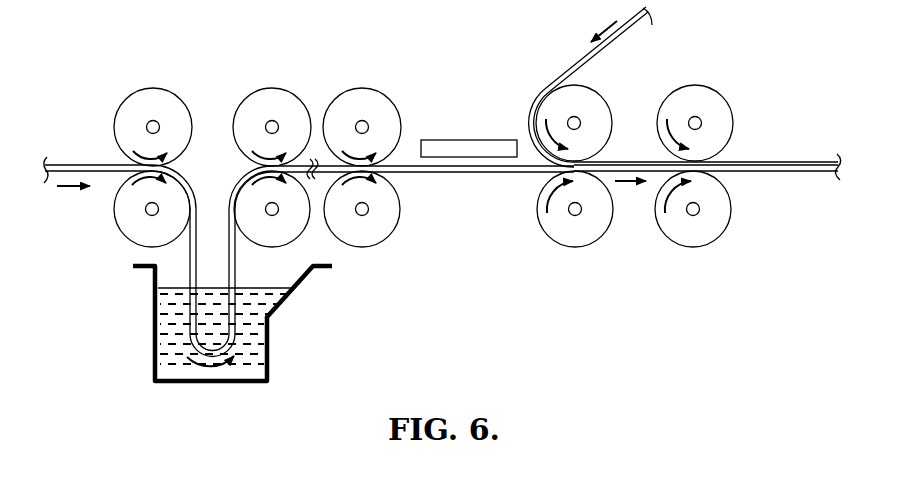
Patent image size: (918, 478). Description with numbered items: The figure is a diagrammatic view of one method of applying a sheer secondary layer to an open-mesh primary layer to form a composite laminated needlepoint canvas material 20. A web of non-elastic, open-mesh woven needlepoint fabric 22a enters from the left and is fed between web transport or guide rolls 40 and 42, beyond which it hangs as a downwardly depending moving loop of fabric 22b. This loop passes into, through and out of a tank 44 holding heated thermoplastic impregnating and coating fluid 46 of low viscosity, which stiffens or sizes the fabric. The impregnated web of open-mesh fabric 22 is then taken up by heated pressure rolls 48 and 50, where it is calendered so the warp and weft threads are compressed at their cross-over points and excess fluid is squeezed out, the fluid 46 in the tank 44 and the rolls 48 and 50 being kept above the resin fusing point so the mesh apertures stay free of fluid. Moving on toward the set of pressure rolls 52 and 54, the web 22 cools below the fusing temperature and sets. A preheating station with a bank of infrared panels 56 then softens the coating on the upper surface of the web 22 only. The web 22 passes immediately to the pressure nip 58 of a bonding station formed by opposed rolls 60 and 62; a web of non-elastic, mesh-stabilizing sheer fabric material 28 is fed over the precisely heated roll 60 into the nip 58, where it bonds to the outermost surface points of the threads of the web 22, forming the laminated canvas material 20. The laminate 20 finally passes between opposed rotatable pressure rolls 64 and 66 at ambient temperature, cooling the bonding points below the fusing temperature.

The composite laminated needlepoint canvas material 20 is at (629, 148).
The web of open-mesh fabric 22 is at (233, 182).
The web of non-elastic open-mesh woven needlepoint fabric 22a is at (78, 165).
The downwardly depending moving loop of open-mesh fabric 22b is at (236, 263).
The web of non-elastic mesh-stabilizing sheer fabric material 28 is at (634, 30).
The web transport or guide roll 40 is at (148, 89).
The web transport or guide roll 42 is at (126, 240).
The tank 44 is at (154, 334).
The heated thermoplastic fabric impregnating and coating fluid 46 is at (250, 340).
The heated pressure roll 48 is at (270, 89).
The heated pressure roll 50 is at (300, 237).
The pressure roll 52 is at (368, 89).
The pressure roll 54 is at (385, 242).
The bank of infrared panels 56 is at (445, 140).
The pressure nip 58 is at (536, 175).
The pressure roll 60 is at (592, 94).
The roll 62 is at (565, 247).
The pressure roll 64 is at (710, 94).
The pressure roll 66 is at (688, 247).